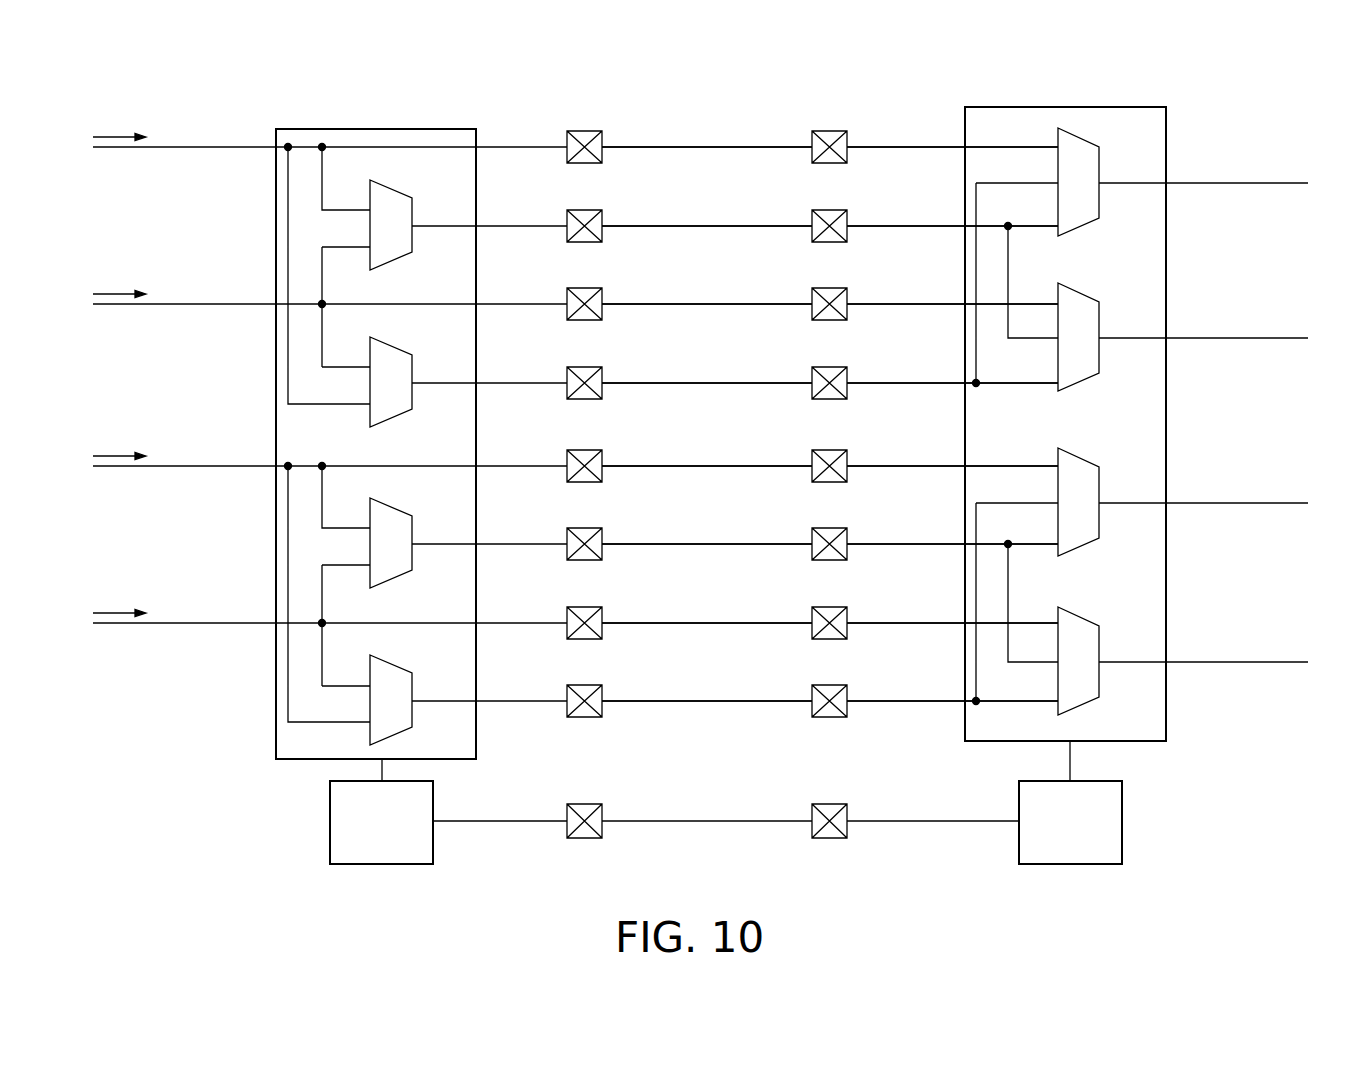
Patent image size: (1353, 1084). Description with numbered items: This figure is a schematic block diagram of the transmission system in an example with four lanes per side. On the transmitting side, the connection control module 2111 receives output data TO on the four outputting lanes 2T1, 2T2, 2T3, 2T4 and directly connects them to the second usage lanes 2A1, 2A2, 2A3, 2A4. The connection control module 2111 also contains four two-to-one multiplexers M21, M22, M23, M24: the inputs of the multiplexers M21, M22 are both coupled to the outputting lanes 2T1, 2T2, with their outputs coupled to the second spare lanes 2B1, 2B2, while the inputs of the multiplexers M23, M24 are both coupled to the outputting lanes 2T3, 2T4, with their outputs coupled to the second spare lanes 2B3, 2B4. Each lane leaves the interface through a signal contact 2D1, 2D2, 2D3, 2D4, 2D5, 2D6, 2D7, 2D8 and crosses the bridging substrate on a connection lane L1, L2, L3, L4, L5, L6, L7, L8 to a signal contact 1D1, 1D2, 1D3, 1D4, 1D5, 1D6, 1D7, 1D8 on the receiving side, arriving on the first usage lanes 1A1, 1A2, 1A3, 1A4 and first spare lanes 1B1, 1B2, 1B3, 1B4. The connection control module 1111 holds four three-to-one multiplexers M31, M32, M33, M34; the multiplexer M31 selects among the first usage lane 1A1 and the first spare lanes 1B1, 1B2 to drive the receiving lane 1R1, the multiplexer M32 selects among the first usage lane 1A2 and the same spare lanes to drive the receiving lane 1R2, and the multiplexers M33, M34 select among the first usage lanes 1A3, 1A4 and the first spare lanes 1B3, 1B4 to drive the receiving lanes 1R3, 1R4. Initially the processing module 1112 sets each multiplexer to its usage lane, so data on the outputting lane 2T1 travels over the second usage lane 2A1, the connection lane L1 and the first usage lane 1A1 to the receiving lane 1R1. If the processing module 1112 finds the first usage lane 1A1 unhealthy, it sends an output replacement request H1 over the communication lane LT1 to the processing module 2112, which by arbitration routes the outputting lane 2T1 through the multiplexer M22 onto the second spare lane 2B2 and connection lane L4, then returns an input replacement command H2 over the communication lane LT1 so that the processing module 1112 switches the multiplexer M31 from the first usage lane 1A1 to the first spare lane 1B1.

The connection control module 2111 is at (375, 129).
The processing module 2112 is at (330, 822).
The connection control module 1111 is at (1064, 107).
The processing module 1112 is at (1122, 822).
The 2-to-1 multiplexer M21 is at (393, 189).
The 2-to-1 multiplexer M22 is at (393, 346).
The 2-to-1 multiplexer M23 is at (393, 507).
The 2-to-1 multiplexer M24 is at (393, 664).
The 3-to-1 multiplexer M31 is at (1080, 137).
The 3-to-1 multiplexer M32 is at (1080, 292).
The 3-to-1 multiplexer M33 is at (1080, 457).
The 3-to-1 multiplexer M34 is at (1080, 616).
The outputting lane 2T1 is at (233, 147).
The outputting lane 2T2 is at (233, 304).
The outputting lane 2T3 is at (233, 466).
The outputting lane 2T4 is at (233, 623).
The second usage lane 2A1 is at (510, 147).
The second usage lane 2A2 is at (510, 304).
The second usage lane 2A3 is at (510, 466).
The second usage lane 2A4 is at (510, 623).
The second spare lane 2B1 is at (510, 226).
The second spare lane 2B2 is at (510, 383).
The second spare lane 2B3 is at (510, 544).
The second spare lane 2B4 is at (510, 701).
The signal contact 2D1 is at (585, 131).
The signal contact 2D2 is at (585, 210).
The signal contact 2D3 is at (585, 288).
The signal contact 2D4 is at (585, 367).
The signal contact 2D5 is at (585, 450).
The signal contact 2D6 is at (585, 528).
The signal contact 2D7 is at (585, 607).
The signal contact 2D8 is at (585, 685).
The connection lane L1 is at (712, 147).
The connection lane L2 is at (712, 226).
The connection lane L3 is at (712, 304).
The connection lane L4 is at (712, 383).
The connection lane L5 is at (712, 466).
The connection lane L6 is at (712, 544).
The connection lane L7 is at (712, 623).
The connection lane L8 is at (712, 701).
The signal contact 1D1 is at (830, 131).
The signal contact 1D2 is at (830, 210).
The signal contact 1D3 is at (830, 288).
The signal contact 1D4 is at (830, 367).
The signal contact 1D5 is at (830, 450).
The signal contact 1D6 is at (830, 528).
The signal contact 1D7 is at (830, 607).
The signal contact 1D8 is at (830, 685).
The first usage lane 1A1 is at (885, 147).
The first usage lane 1A2 is at (885, 304).
The first usage lane 1A3 is at (885, 466).
The first usage lane 1A4 is at (885, 623).
The first spare lane 1B1 is at (885, 226).
The first spare lane 1B2 is at (885, 383).
The first spare lane 1B3 is at (885, 544).
The first spare lane 1B4 is at (885, 701).
The receiving lane 1R1 is at (1197, 183).
The receiving lane 1R2 is at (1197, 338).
The receiving lane 1R3 is at (1197, 503).
The receiving lane 1R4 is at (1197, 662).
The communication lane LT1 is at (712, 821).
The output replacement request H1 is at (990, 814).
The input replacement command H2 is at (520, 812).